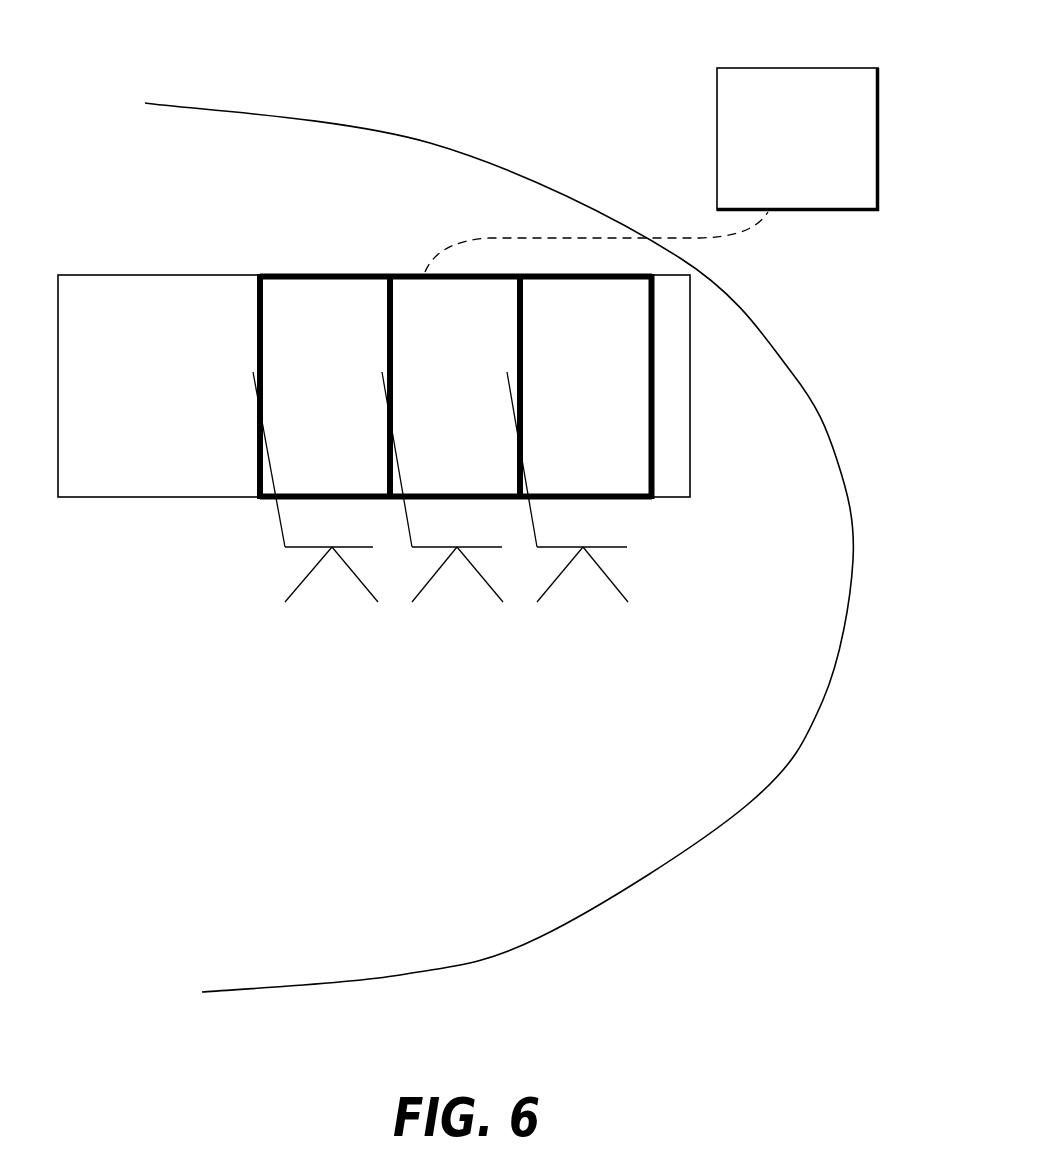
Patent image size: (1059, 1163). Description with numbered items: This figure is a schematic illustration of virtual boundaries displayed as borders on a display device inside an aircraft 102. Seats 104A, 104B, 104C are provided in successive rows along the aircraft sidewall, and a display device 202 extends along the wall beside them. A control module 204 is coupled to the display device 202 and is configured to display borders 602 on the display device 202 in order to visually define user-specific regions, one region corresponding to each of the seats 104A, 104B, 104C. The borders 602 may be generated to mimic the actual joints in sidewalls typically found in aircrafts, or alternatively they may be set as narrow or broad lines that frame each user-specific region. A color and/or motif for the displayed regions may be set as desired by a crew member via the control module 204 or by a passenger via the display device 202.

The aircraft 102 is at (792, 373).
The display device 202 is at (225, 276).
The control module 204 is at (773, 68).
The borders 602 is at (652, 405).
The seat 104A is at (278, 511).
The seat 104B is at (408, 527).
The seat 104C is at (532, 526).